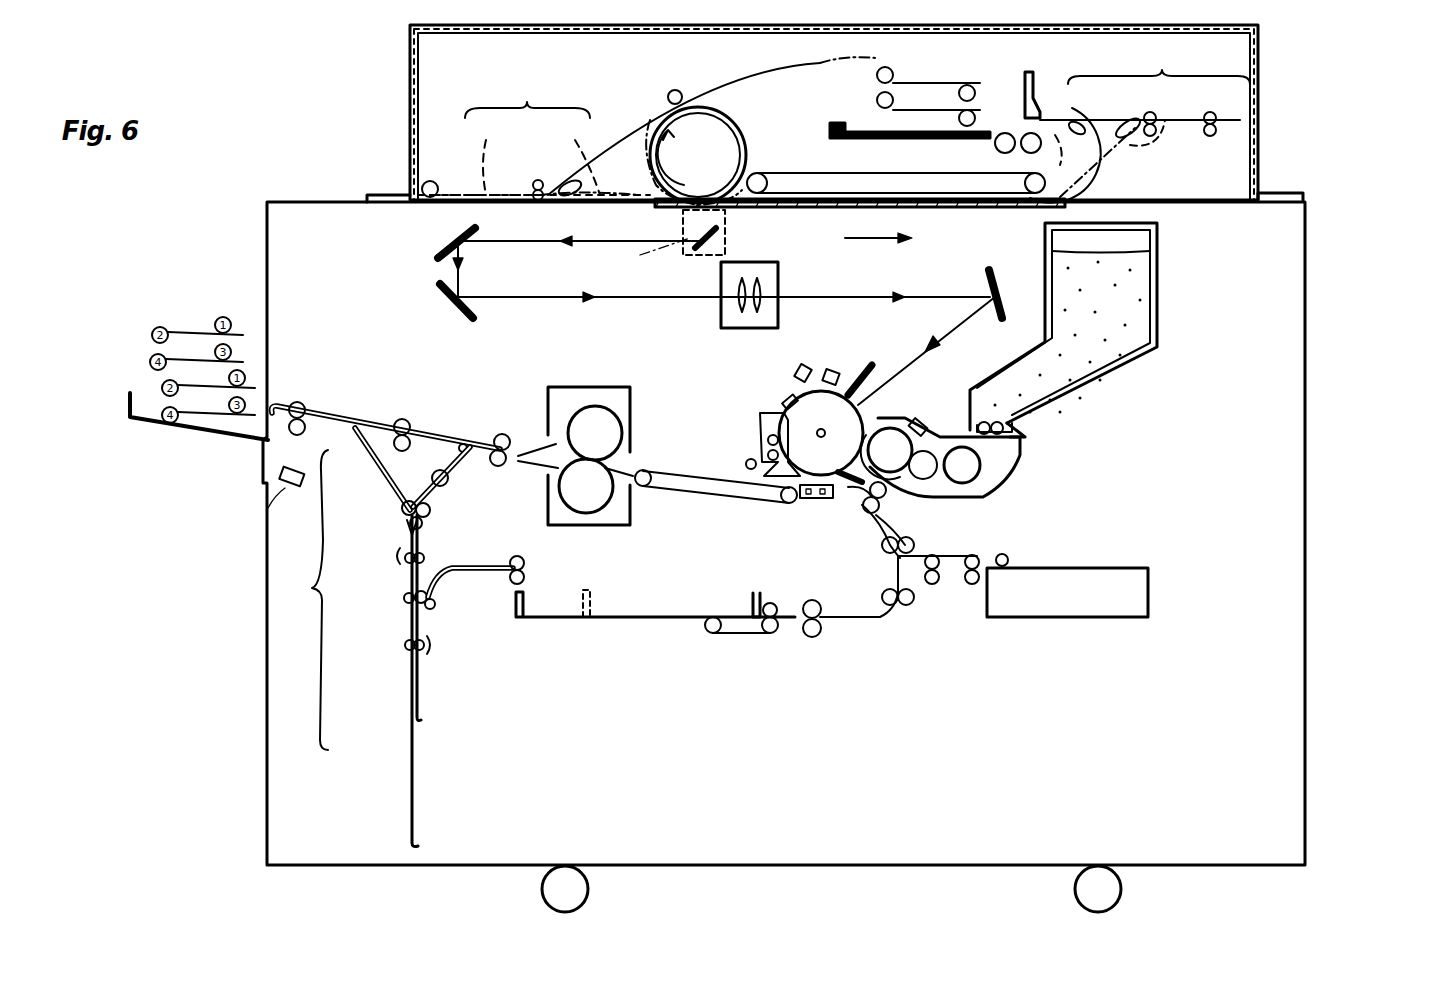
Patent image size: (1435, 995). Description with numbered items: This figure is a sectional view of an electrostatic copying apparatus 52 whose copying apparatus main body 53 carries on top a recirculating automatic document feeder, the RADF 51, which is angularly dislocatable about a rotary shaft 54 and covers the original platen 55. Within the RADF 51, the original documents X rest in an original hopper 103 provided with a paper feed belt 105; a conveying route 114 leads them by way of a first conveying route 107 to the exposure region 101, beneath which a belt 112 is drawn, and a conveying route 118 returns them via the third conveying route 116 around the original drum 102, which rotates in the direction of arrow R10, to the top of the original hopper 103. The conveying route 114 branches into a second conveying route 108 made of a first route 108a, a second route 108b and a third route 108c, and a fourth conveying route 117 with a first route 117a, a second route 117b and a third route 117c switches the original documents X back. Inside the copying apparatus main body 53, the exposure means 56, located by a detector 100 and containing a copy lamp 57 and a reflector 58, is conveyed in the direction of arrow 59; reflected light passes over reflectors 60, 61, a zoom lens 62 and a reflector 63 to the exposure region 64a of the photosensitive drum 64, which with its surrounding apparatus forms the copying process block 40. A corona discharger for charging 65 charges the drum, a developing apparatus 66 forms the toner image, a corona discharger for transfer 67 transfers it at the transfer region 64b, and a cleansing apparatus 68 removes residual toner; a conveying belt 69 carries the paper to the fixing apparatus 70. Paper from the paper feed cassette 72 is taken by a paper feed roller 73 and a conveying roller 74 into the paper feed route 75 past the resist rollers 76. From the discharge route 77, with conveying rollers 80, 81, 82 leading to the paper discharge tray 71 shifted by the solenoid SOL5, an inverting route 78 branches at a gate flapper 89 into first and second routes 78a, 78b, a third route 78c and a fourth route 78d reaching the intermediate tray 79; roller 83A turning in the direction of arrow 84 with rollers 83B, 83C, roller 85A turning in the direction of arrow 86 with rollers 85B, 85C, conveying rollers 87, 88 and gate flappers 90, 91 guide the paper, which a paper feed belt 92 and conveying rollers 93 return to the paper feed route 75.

The copying apparatus 52 is at (1343, 86).
The copying apparatus main body 53 is at (316, 216).
The RADF 51 is at (1258, 140).
The rotary shaft 54 is at (422, 184).
The original platen 55 is at (975, 208).
The conveying route 114 is at (935, 208).
The original drum 102 is at (740, 130).
The arrow R10 is at (685, 160).
The conveying route 118 is at (712, 90).
The third conveying route 116 is at (646, 135).
The fourth conveying route 117 is at (535, 133).
The first route 117a is at (566, 182).
The second route 117b is at (490, 153).
The third route 117c is at (566, 153).
The original hopper 103 is at (866, 132).
The original document X is at (938, 70).
The paper feed belt 105 is at (1015, 133).
The transport belt 112 is at (830, 165).
The first conveying route 107 is at (1082, 155).
The second conveying route 108 is at (1145, 79).
The first route 108a is at (1082, 122).
The second route 108b is at (1192, 122).
The third route 108c is at (1156, 118).
The reflector 60 is at (450, 241).
The reflector 61 is at (452, 296).
The exposure region 101 is at (690, 214).
The detector 100 is at (692, 258).
The exposure means 56 is at (660, 252).
The copy lamp 57 is at (715, 222).
The reflector 58 is at (710, 255).
The arrow 59 is at (875, 241).
The zoom lens 62 is at (778, 315).
The reflector 63 is at (1000, 286).
The photosensitive drum 64 is at (806, 396).
The exposure region 64a is at (862, 410).
The transfer region 64b is at (822, 480).
The copying process block 40 is at (756, 389).
The corona discharger for charging 65 is at (845, 375).
The cleansing apparatus 68 is at (760, 433).
The developing apparatus 66 is at (990, 465).
The corona discharger for transfer 67 is at (822, 500).
The conveying belt 69 is at (668, 468).
The fixing apparatus 70 is at (610, 390).
The resist rollers 76 is at (878, 520).
The paper feed route 75 is at (888, 578).
The conveying roller 74 is at (965, 555).
The paper feed roller 73 is at (1003, 553).
The paper feed cassette 72 is at (1090, 580).
The intermediate tray 79 is at (655, 620).
The paper feed belt 92 is at (742, 634).
The conveying rollers 93 is at (820, 630).
The paper discharge tray 71 is at (148, 422).
The solenoid SOL5 is at (267, 508).
The discharge route 77 is at (342, 420).
The conveying rollers 82 is at (305, 408).
The conveying rollers 81 is at (410, 425).
The conveying rollers 80 is at (500, 435).
The gate flapper 89 is at (462, 444).
The inverting route 78 is at (301, 600).
The first route 78a is at (458, 470).
The second route 78b is at (385, 475).
The third route 78c is at (405, 588).
The fourth route 78d is at (485, 568).
The arrow 84 is at (430, 483).
The roller 83A is at (431, 510).
The roller 83B is at (423, 525).
The roller 83C is at (402, 510).
The gate flapper 90 is at (405, 530).
The arrow 86 is at (424, 560).
The conveying roller 87 is at (398, 566).
The roller 85A is at (430, 596).
The roller 85B is at (436, 608).
The roller 85C is at (405, 602).
The conveying roller 88 is at (404, 646).
The gate flapper 91 is at (432, 632).